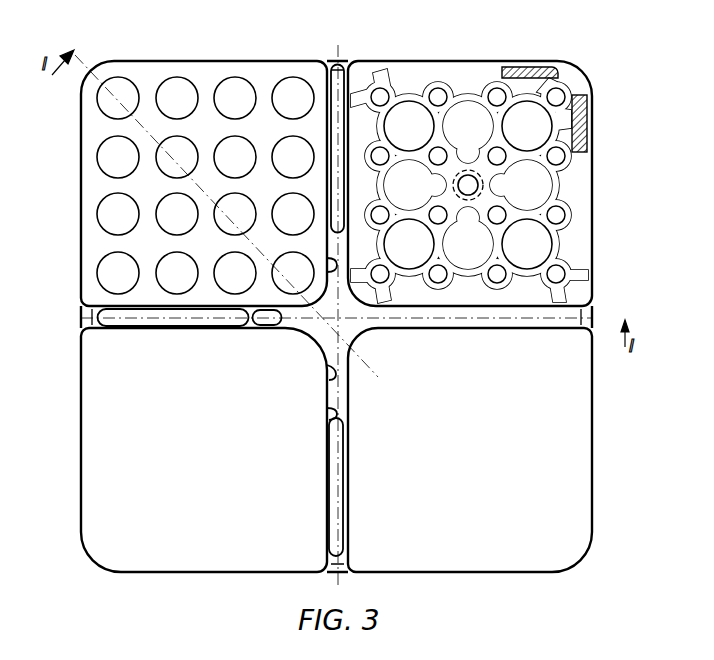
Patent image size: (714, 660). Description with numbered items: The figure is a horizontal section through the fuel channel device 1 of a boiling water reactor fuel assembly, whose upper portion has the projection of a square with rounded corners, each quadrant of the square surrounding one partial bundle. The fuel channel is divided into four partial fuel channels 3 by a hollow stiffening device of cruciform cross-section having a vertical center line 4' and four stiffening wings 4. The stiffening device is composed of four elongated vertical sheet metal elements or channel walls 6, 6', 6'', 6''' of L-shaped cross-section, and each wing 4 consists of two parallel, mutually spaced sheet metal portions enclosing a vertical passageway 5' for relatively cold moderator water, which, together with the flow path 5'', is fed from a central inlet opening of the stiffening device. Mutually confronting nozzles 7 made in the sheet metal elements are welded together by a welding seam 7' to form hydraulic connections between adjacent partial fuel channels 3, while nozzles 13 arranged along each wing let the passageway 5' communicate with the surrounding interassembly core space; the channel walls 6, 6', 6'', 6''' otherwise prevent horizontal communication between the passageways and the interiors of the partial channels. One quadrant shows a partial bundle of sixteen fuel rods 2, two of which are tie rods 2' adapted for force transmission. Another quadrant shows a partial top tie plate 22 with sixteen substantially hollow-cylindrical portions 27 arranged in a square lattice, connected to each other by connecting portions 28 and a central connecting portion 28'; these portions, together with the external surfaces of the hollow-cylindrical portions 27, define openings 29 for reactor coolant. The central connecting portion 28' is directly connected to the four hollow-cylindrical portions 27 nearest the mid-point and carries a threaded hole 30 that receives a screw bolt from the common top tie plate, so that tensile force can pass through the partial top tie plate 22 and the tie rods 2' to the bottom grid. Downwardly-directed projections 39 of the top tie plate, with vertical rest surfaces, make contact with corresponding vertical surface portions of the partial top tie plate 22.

The fuel channel device 1 is at (593, 430).
The fuel rods 2 is at (177, 185).
The tie rods 2' is at (200, 140).
The partial fuel channel 3 is at (143, 556).
The stiffening wing 4 is at (336, 315).
The vertical center line of the stiffening device 4' is at (239, 224).
The vertical passageway 5' is at (221, 291).
The flow path 5'' is at (314, 363).
The channel wall 6 is at (361, 480).
The channel wall 6' is at (384, 325).
The channel wall 6'' is at (317, 129).
The channel wall 6''' is at (274, 366).
The nozzles 7 is at (282, 339).
The welding seam 7' is at (250, 336).
The nozzles 13 is at (80, 328).
The partial top tie plate 22 is at (558, 196).
The hollow-cylindrical portions 27 is at (491, 88).
The connecting portions 28 is at (509, 233).
The central connecting portion 28' is at (468, 185).
The openings 29 is at (403, 112).
The threaded hole 30 is at (457, 186).
The downwardly-directed projections 39 is at (545, 68).